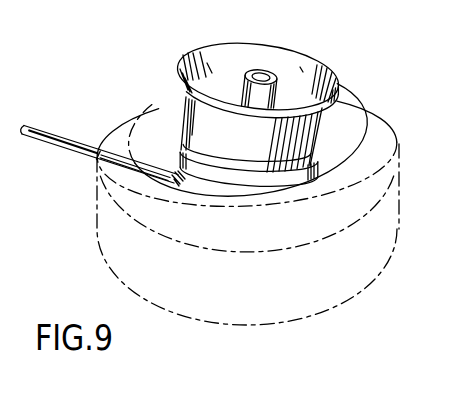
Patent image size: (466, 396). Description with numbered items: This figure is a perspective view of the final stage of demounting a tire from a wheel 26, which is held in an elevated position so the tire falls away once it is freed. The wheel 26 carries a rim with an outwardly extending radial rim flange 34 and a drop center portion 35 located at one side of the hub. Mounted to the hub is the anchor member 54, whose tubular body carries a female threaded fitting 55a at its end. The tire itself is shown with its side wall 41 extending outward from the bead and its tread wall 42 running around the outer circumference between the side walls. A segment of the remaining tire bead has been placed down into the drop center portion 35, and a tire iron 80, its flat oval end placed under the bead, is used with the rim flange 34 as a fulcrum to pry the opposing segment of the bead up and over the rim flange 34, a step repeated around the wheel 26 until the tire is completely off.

The wheel 26 is at (257, 98).
The rim flange 34 is at (187, 96).
The drop center portion 35 is at (207, 156).
The side wall 41 is at (358, 129).
The tread wall 42 is at (399, 213).
The anchor member 54 is at (277, 80).
The female threaded fitting 55a is at (253, 72).
The tire iron 80 is at (102, 162).